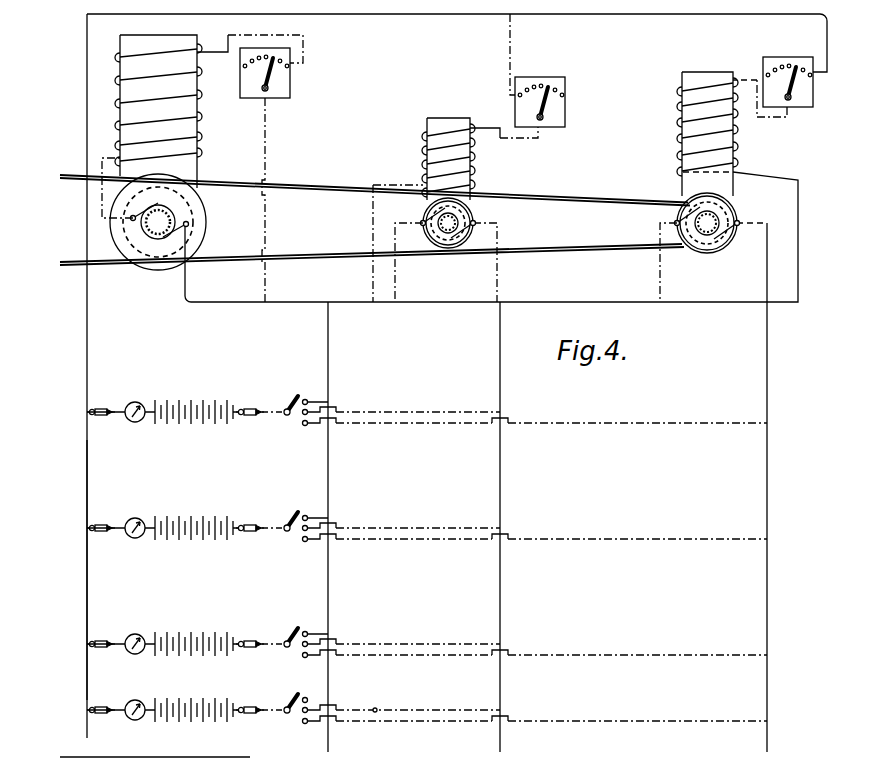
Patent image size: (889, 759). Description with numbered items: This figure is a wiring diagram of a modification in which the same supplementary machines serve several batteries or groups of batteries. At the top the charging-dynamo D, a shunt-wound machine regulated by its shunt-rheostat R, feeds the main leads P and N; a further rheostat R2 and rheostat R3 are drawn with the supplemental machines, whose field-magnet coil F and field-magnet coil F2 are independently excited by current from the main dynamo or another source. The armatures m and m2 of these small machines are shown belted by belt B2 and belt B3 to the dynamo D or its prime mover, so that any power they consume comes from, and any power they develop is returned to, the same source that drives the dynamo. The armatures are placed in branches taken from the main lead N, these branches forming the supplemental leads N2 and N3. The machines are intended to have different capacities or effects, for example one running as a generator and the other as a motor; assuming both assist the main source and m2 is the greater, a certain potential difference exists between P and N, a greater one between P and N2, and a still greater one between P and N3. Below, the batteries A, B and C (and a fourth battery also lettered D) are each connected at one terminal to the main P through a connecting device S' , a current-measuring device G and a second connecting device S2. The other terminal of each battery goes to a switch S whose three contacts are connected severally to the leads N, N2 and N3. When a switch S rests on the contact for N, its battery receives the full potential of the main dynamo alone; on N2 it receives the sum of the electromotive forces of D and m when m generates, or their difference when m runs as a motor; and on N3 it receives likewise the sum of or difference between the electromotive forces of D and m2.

The charging-dynamo D is at (205, 128).
The shunt-rheostat R is at (276, 175).
The rheostat R2 is at (560, 102).
The rheostat R3 is at (791, 87).
The field-magnet coil F is at (422, 132).
The field-magnet coil F2 is at (730, 134).
The armature m is at (418, 213).
The armature m2 is at (716, 247).
The belt B2 is at (576, 200).
The belt B3 is at (325, 250).
The main lead N is at (328, 502).
The supplemental lead N2 is at (500, 483).
The supplemental lead N3 is at (767, 505).
The battery A is at (194, 396).
The battery B is at (194, 513).
The battery C is at (194, 629).
The connecting device S' is at (106, 545).
The connecting device S2 is at (260, 545).
The switch S is at (525, 549).
The current-measuring device G is at (135, 572).
The main lead P is at (96, 570).